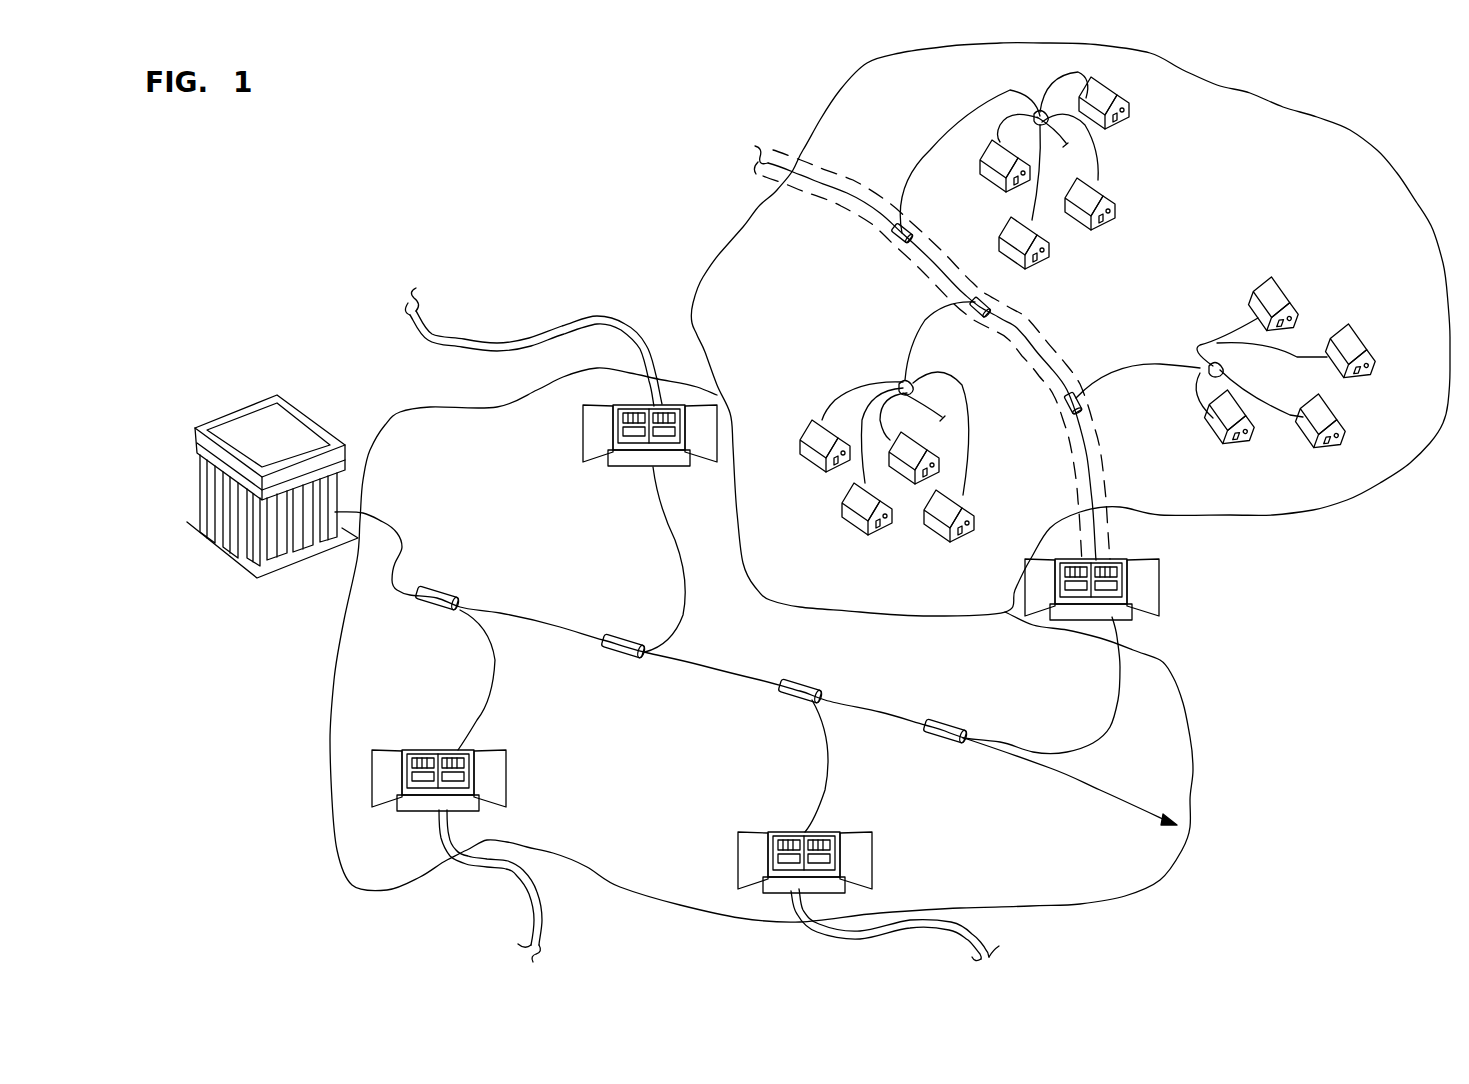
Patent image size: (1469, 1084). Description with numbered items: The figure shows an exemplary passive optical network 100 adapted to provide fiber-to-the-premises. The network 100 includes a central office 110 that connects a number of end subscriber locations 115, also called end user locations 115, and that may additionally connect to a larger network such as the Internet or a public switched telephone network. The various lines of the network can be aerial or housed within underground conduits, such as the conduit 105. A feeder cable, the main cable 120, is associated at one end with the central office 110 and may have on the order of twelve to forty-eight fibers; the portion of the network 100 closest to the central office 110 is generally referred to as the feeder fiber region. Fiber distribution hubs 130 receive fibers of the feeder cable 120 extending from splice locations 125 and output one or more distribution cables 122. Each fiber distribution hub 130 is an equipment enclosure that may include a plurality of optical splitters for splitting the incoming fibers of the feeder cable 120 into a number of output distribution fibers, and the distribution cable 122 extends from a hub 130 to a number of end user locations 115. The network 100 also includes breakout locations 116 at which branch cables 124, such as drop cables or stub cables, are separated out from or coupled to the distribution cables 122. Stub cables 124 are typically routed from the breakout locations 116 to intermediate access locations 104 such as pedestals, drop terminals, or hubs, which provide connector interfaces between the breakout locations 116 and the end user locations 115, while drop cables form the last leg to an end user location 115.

The passive optical network 100 is at (452, 212).
The intermediate access location 104 is at (1038, 112).
The conduit 105 is at (1102, 462).
The central office 110 is at (195, 482).
The end subscriber location 115 is at (1098, 200).
The breakout location 116 is at (984, 298).
The main cable 120 is at (402, 535).
The distribution cable 122 is at (1023, 333).
The branch cable 124 is at (1139, 362).
The splice location 125 is at (428, 592).
The fiber distribution hub 130 is at (692, 465).